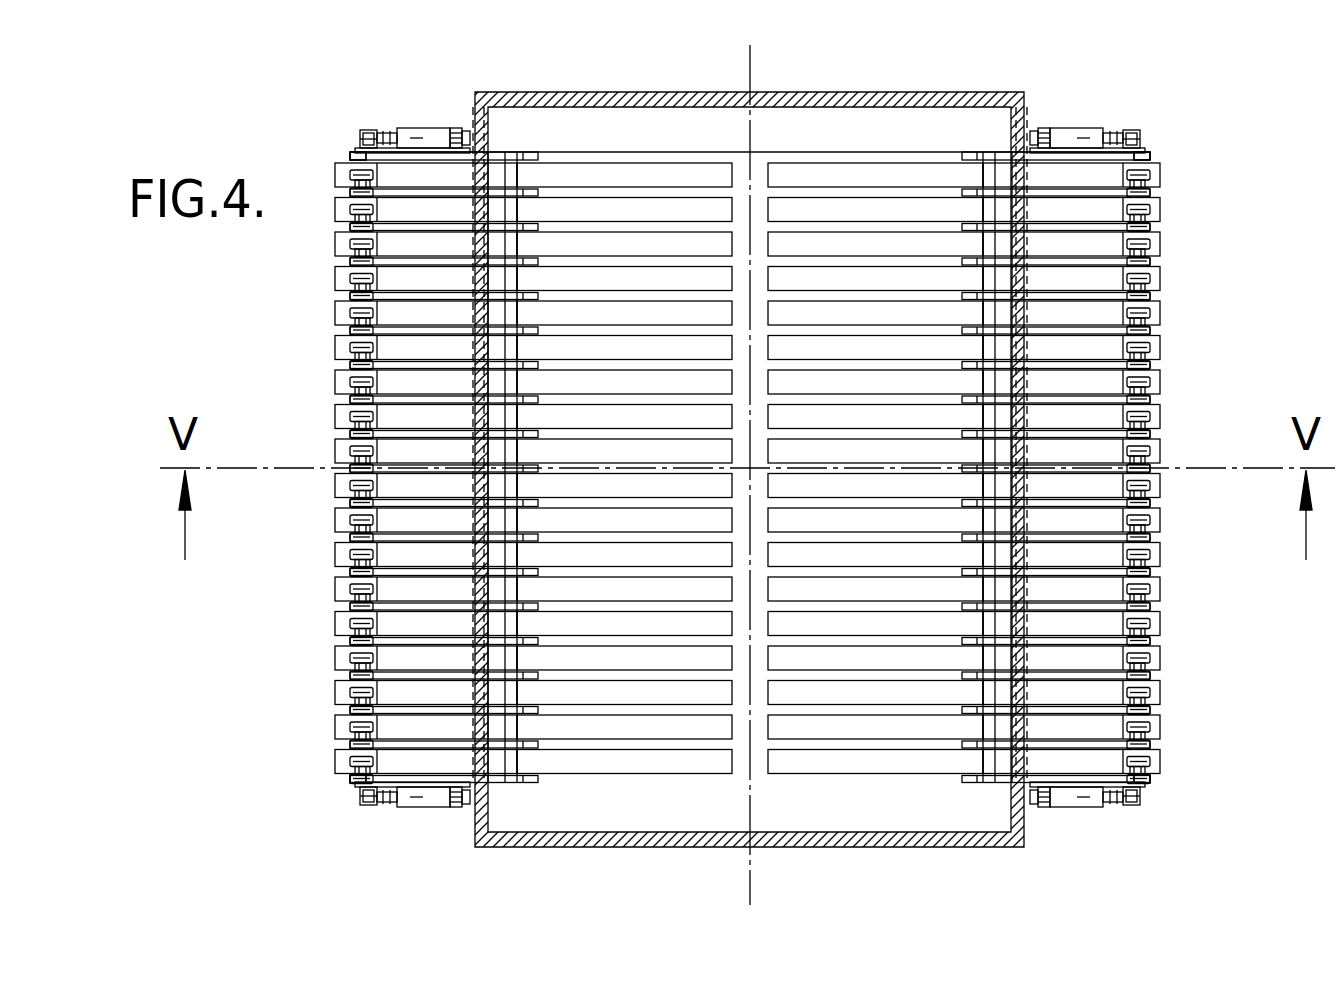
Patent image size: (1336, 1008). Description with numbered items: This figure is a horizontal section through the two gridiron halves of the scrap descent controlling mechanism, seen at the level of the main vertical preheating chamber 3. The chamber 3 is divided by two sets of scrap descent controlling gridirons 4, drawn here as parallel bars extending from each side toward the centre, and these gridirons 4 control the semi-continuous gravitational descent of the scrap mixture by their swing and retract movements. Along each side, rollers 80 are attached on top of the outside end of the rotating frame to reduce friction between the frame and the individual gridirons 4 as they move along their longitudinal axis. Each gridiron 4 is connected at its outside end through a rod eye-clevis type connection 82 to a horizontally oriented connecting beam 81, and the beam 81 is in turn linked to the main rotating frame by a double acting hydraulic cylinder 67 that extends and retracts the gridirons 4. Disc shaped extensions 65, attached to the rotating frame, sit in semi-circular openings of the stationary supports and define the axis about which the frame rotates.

The main vertical preheating chamber 3 is at (636, 858).
The scrap descent controlling gridirons 4 is at (697, 178).
The disc shaped extensions 65 is at (462, 148).
The double acting hydraulic cylinder 67 is at (413, 133).
The rollers 80 is at (1145, 178).
The connecting beam 81 is at (352, 150).
The rod eye-clevis type connection 82 is at (358, 132).